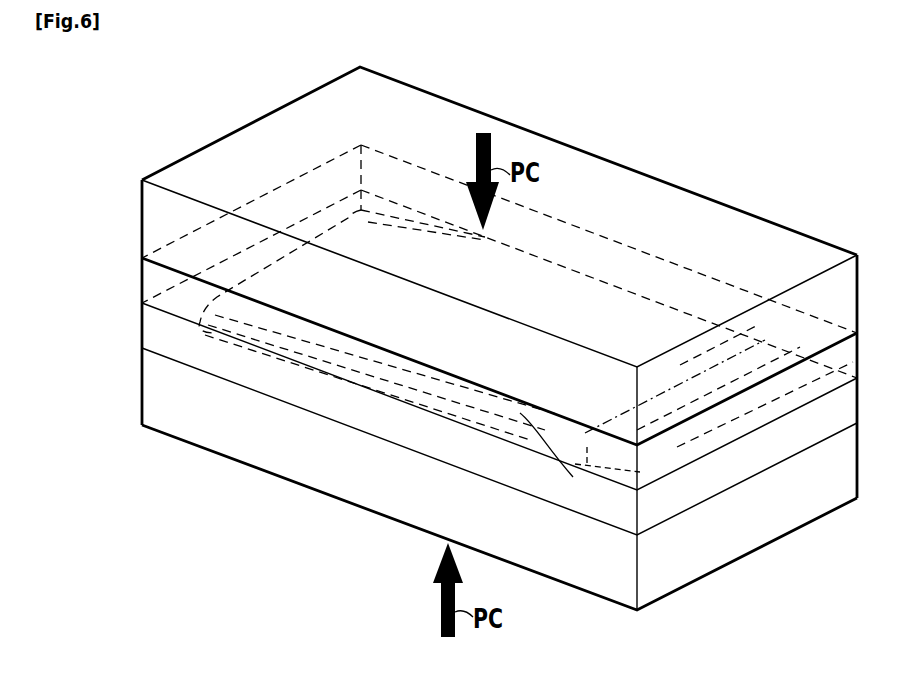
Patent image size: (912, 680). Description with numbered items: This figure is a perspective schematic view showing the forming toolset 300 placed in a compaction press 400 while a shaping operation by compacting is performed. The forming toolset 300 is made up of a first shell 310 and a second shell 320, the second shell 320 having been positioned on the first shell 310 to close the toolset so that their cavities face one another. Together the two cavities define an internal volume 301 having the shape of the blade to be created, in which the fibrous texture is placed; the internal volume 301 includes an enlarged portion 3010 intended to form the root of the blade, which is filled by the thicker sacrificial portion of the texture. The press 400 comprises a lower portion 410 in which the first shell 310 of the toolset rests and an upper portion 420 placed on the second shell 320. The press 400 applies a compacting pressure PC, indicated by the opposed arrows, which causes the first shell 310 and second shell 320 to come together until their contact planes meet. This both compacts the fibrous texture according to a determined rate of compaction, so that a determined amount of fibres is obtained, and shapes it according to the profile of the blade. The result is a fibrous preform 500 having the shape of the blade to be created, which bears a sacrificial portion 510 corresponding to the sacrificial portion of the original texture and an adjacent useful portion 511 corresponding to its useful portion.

The forming toolset 300 is at (434, 340).
The first shell 310 is at (467, 419).
The second shell 320 is at (140, 275).
The internal volume 301 is at (273, 328).
The enlarged portion of the internal volume 3010 is at (589, 453).
The fibrous preform 500 is at (560, 291).
The sacrificial portion 510 is at (763, 357).
The useful portion 511 is at (723, 346).
The compaction press 400 is at (499, 499).
The lower portion of the press 410 is at (682, 553).
The upper portion of the press 420 is at (828, 333).